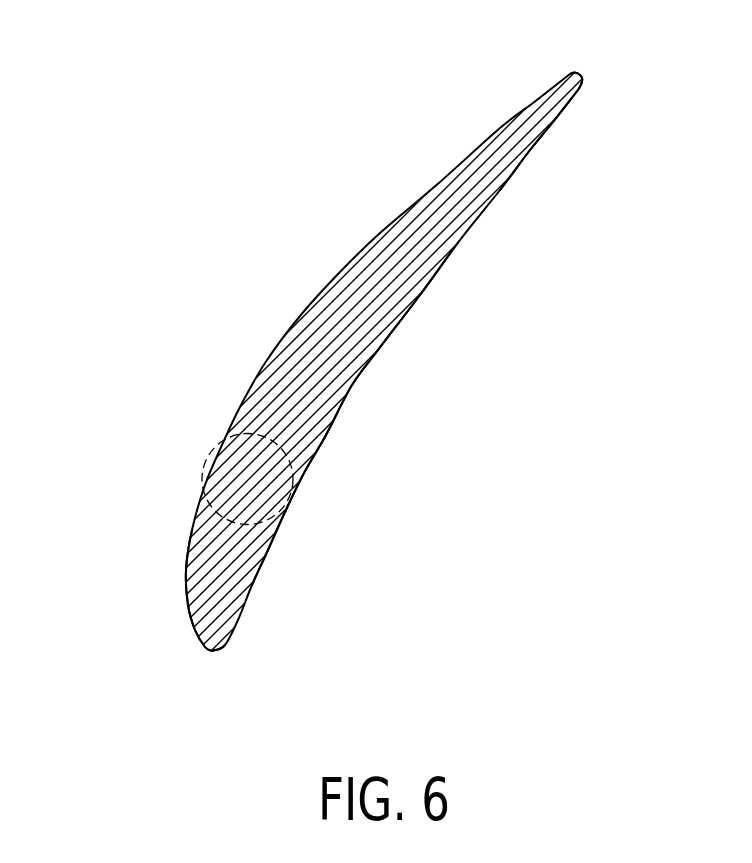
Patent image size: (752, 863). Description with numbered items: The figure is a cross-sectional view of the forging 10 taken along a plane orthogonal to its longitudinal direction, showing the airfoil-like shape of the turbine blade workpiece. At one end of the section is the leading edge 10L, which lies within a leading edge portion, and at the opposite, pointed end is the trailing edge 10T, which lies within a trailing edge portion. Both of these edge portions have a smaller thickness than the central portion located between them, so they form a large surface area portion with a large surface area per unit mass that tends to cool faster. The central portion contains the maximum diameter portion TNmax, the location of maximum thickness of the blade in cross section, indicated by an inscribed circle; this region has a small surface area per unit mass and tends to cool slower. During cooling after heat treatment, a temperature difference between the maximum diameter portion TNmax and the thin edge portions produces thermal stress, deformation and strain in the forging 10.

The forging 10 is at (359, 242).
The trailing edge 10T is at (576, 72).
The maximum diameter portion TNmax is at (293, 500).
The leading edge 10L is at (207, 655).